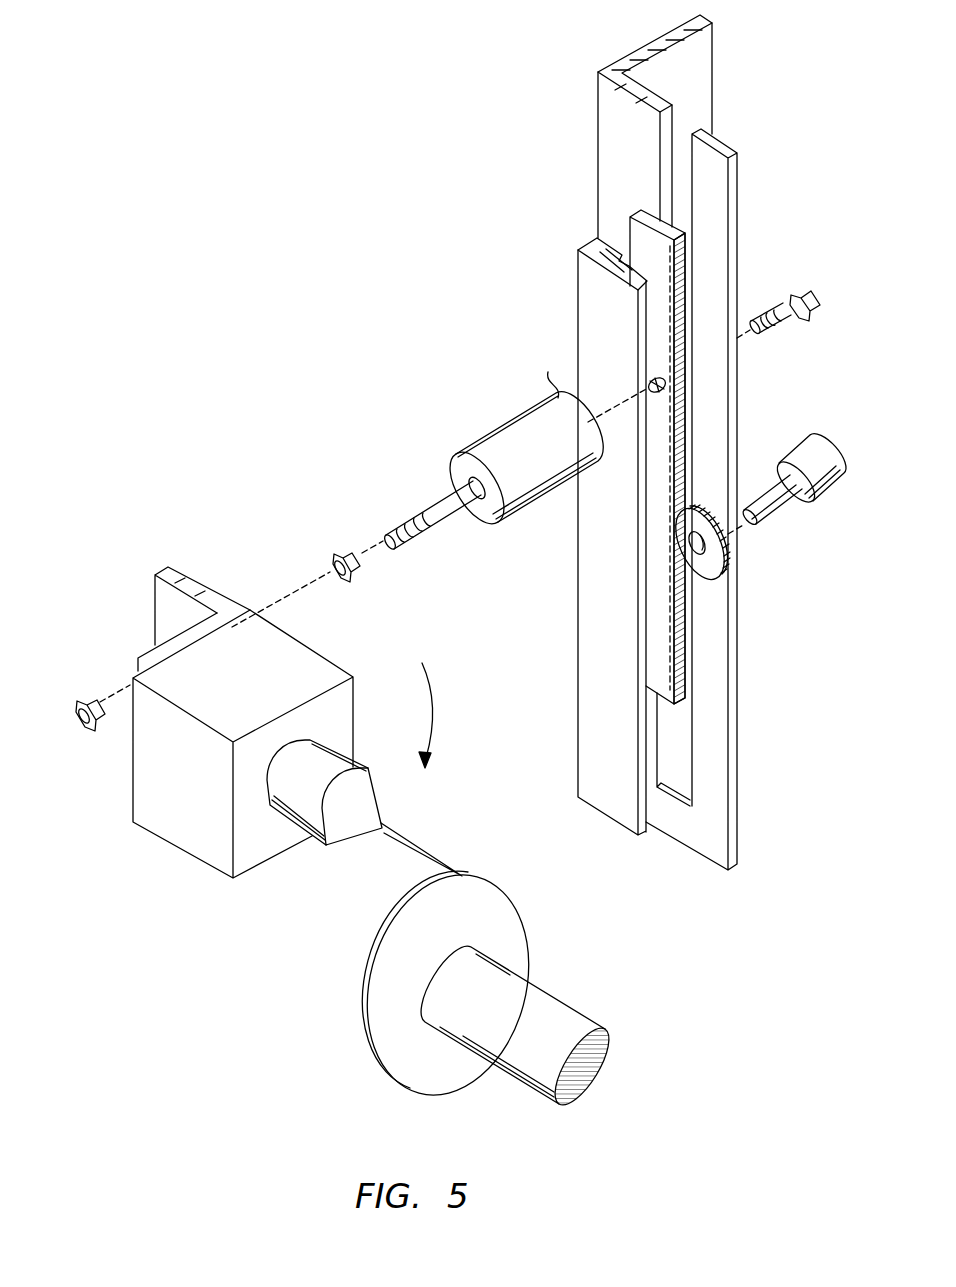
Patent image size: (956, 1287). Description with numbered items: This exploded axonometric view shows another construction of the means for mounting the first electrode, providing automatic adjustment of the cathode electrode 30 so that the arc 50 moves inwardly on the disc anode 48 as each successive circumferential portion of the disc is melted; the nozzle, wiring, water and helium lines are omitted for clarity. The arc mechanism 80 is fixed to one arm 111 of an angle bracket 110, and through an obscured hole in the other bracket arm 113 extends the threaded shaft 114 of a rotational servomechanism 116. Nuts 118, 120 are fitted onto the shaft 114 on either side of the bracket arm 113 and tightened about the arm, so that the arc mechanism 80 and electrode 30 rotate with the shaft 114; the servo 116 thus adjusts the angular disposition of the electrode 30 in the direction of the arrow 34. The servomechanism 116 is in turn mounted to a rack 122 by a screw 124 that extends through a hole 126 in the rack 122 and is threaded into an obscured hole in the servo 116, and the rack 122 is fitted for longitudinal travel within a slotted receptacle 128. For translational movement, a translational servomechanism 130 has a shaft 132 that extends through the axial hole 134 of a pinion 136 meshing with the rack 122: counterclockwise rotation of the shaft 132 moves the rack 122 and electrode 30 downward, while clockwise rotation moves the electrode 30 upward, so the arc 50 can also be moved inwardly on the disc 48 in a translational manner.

The cathode electrode 30 is at (312, 836).
The arrow 34 is at (433, 712).
The disc anode 48 is at (392, 937).
The arc 50 is at (410, 850).
The arc mechanism 80 is at (168, 830).
The bracket 110 is at (185, 612).
The arm of angle bracket 111 is at (165, 648).
The bracket arm 113 is at (199, 584).
The threaded shaft 114 is at (412, 516).
The rotational servomechanism 116 is at (503, 432).
The nut 118 is at (88, 696).
The nut 120 is at (338, 551).
The rack 122 is at (648, 248).
The screw 124 is at (800, 289).
The hole 126 is at (651, 380).
The slotted receptacle 128 is at (723, 210).
The translational servomechanism 130 is at (829, 500).
The shaft 132 is at (784, 452).
The axial hole 134 is at (705, 552).
The pinion 136 is at (712, 575).